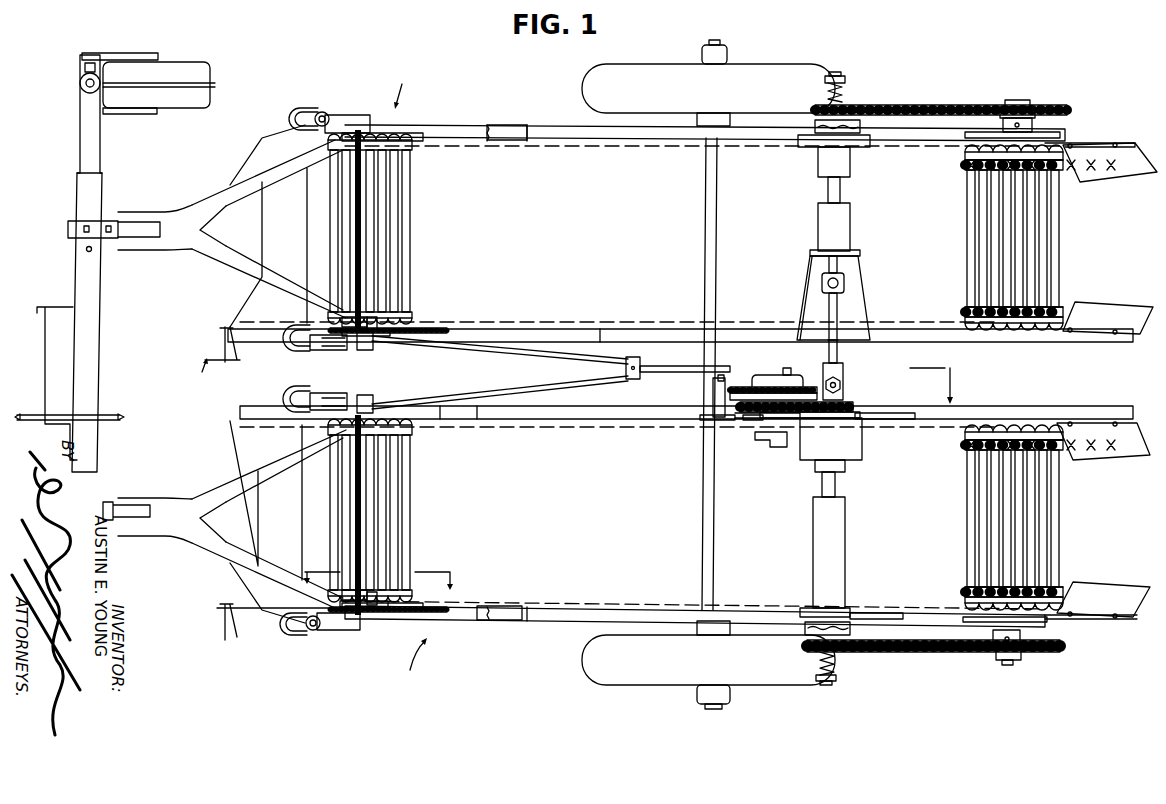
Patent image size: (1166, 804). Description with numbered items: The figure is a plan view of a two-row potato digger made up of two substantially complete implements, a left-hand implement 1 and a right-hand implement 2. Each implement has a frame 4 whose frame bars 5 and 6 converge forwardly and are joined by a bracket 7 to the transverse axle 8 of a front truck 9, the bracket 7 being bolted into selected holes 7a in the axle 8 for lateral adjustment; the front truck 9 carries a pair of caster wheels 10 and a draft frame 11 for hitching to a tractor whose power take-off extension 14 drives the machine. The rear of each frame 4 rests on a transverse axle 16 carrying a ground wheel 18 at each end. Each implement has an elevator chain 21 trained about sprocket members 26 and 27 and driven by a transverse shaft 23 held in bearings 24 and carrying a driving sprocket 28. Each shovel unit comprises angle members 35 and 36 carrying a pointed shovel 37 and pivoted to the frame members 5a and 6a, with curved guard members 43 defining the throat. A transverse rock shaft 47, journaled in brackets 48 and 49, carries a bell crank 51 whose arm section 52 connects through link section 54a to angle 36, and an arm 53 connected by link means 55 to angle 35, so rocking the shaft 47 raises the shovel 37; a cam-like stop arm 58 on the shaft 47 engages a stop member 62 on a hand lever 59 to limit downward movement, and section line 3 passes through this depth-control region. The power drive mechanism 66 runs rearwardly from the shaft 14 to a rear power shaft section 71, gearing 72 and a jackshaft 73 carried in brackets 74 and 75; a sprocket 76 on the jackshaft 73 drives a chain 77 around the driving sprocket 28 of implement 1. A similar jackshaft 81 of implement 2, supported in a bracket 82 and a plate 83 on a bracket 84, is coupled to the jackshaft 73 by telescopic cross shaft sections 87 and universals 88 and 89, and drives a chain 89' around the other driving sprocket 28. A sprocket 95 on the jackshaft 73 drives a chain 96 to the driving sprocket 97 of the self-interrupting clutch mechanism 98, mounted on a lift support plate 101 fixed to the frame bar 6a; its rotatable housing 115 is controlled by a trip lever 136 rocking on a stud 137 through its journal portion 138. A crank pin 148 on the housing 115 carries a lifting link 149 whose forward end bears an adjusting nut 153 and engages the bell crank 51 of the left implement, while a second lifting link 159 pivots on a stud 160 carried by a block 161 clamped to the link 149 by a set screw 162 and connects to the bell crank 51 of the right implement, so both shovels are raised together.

The left-hand implement 1 is at (414, 667).
The right-hand implement 2 is at (575, 232).
The section line 3 is at (384, 586).
The frame 4 is at (524, 122).
The frame bar 5 is at (278, 166).
The frame member 5a is at (610, 137).
The frame bar 6 is at (270, 296).
The inside frame bar 6a is at (594, 334).
The bracket 7 is at (76, 231).
The holes 7a is at (91, 251).
The transverse axle 8 is at (90, 341).
The front truck 9 is at (42, 197).
The caster wheels 10 is at (188, 66).
The draft frame 11 is at (45, 423).
The power take-off shaft extension 14 is at (23, 415).
The transverse axle 16 is at (711, 203).
The ground wheel 18 is at (630, 673).
The elevator chain 21 is at (412, 207).
The transverse shaft 23 is at (1017, 100).
The bearings 24 is at (1032, 125).
The sprocket member 26 is at (968, 177).
The sprocket member 27 is at (968, 450).
The driving sprocket 28 is at (1040, 107).
The angle member 35 is at (477, 139).
The angle member 36 is at (477, 415).
The pointed shovel 37 is at (220, 237).
The curved guard members 43 is at (300, 112).
The transverse rock shaft 47 is at (355, 223).
The bracket 48 is at (424, 328).
The bracket 49 is at (413, 134).
The lifting bell crank 51 is at (362, 352).
The arm section 52 is at (300, 346).
The arm 53 is at (345, 115).
The link section 54a is at (325, 350).
The link means 55 is at (318, 111).
The cam-like stop arm 58 is at (372, 317).
The hand lever 59 is at (384, 347).
The stop member 62 is at (379, 318).
The power drive mechanism 66 is at (786, 288).
The rear power shaft section 71 is at (764, 438).
The gearing 72 is at (862, 446).
The jackshaft 73 is at (822, 485).
The bracket 74 is at (862, 613).
The bracket 75 is at (888, 413).
The sprocket 76 is at (833, 655).
The driving chain 77 is at (917, 652).
The jackshaft 81 is at (838, 82).
The bracket 82 is at (866, 141).
The laterally extending plate 83 is at (856, 272).
The bracket 84 is at (808, 312).
The telescopic cross shaft sections 87 is at (840, 330).
The universal joint 88 is at (846, 287).
The universal joint 89 is at (854, 376).
The chain 89' is at (941, 89).
The sprocket 95 is at (830, 412).
The drive chain 96 is at (840, 402).
The driving sprocket 97 is at (755, 418).
The self-interrupting clutch mechanism 98 is at (730, 420).
The lift support plate 101 is at (723, 430).
The rotatable housing 115 is at (800, 372).
The trip lever 136 is at (723, 378).
The stud 137 is at (712, 405).
The journal portion 138 is at (728, 392).
The crank pin 148 is at (795, 372).
The lifting link 149 is at (682, 373).
The adjusting nut 153 is at (346, 351).
The lifting link 159 is at (553, 349).
The stud 160 is at (624, 356).
The pivot block 161 is at (642, 365).
The set screw 162 is at (628, 376).